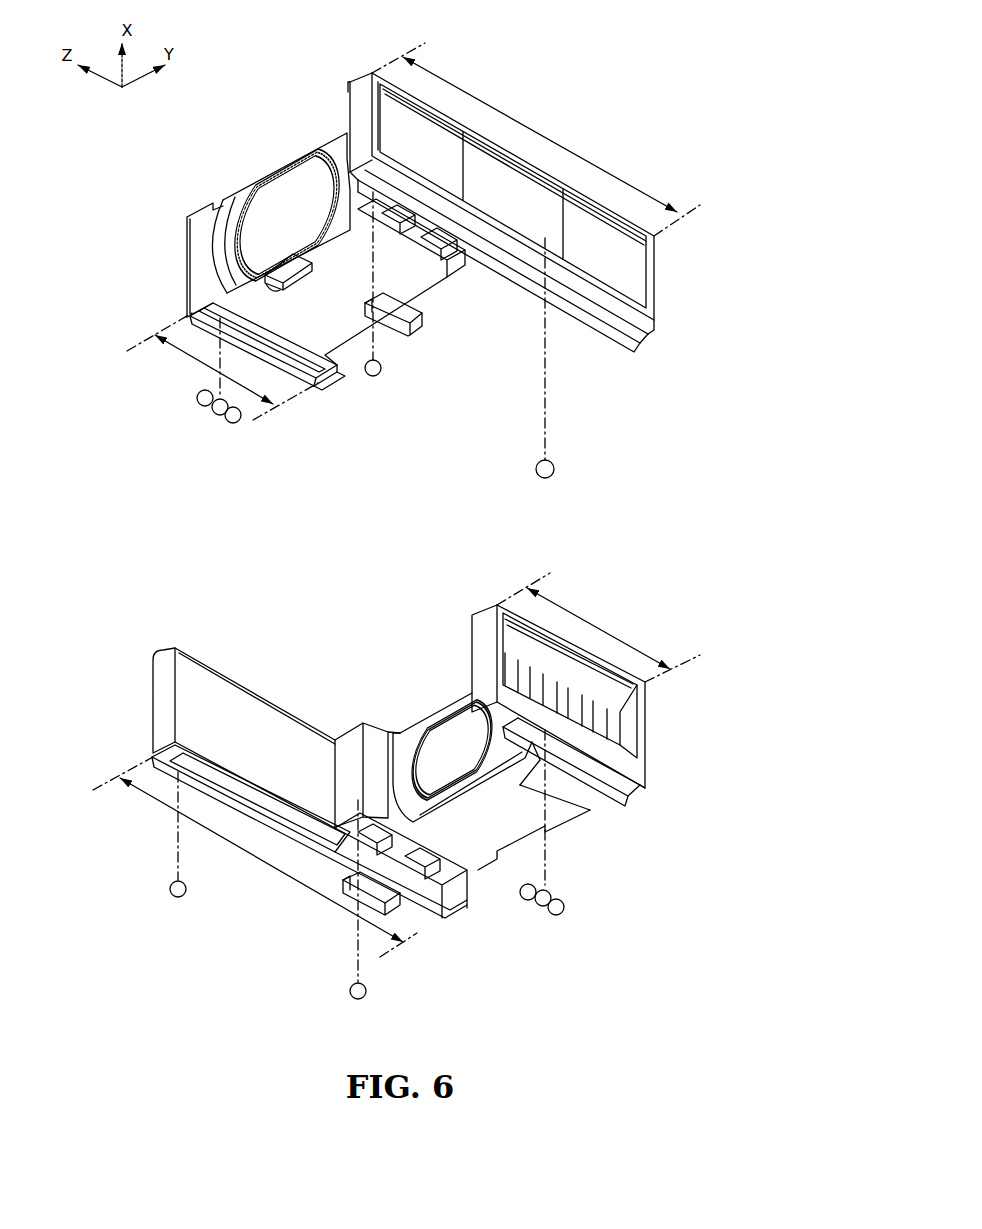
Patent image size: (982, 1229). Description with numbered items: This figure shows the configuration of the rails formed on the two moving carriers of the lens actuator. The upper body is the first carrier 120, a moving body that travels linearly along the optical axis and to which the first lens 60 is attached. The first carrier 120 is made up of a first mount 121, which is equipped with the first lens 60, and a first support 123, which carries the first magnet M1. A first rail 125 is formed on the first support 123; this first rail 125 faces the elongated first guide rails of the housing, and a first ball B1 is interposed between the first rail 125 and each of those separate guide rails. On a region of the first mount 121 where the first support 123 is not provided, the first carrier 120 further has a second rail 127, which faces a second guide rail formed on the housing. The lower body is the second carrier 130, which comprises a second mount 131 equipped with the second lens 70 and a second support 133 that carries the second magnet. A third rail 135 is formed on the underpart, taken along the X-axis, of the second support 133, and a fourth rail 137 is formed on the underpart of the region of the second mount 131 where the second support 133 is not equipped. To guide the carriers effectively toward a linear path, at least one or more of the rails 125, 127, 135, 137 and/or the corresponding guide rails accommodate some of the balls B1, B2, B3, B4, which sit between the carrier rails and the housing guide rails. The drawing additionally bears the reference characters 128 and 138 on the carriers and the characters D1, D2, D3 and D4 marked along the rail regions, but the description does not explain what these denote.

The first lens 60 is at (290, 192).
The second lens 70 is at (462, 740).
The first carrier 120 is at (158, 262).
The first mount 121 is at (338, 360).
The first support 123 is at (648, 316).
The first rail 125 is at (593, 310).
The second rail 127 is at (283, 357).
The stopper block 128 is at (422, 316).
The second carrier 130 is at (128, 630).
The second mount 131 is at (647, 723).
The second support 133 is at (251, 714).
The third rail 135 is at (218, 783).
The fourth rail 137 is at (590, 770).
The stopper block 138 is at (396, 908).
The first magnet M1 is at (548, 194).
The first length dimension D1 is at (222, 366).
The second length dimension D2 is at (536, 139).
The third length dimension D3 is at (598, 627).
The fourth length dimension D4 is at (255, 857).
The first ball B1 is at (382, 367).
The ball B2 is at (210, 413).
The ball B3 is at (169, 890).
The ball B4 is at (559, 911).